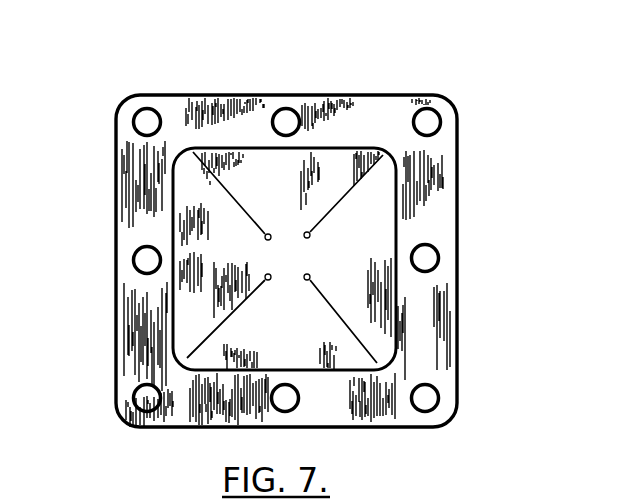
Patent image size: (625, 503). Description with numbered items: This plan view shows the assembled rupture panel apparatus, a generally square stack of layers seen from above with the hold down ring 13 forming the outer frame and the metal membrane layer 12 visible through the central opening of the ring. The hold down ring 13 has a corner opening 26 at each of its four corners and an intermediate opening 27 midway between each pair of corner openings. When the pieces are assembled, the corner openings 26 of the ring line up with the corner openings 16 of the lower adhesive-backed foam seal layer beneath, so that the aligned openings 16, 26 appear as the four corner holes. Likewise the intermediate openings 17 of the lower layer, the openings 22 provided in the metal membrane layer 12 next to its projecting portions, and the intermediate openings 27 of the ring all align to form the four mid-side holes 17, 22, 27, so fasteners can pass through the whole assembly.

The metal membrane layer 12 is at (378, 213).
The hold down ring 13 is at (366, 96).
The corner openings 16 is at (298, 261).
The corner openings 26 is at (147, 120).
The intermediate openings 17 is at (299, 254).
The opening 22 is at (299, 254).
The intermediate openings 27 is at (286, 120).